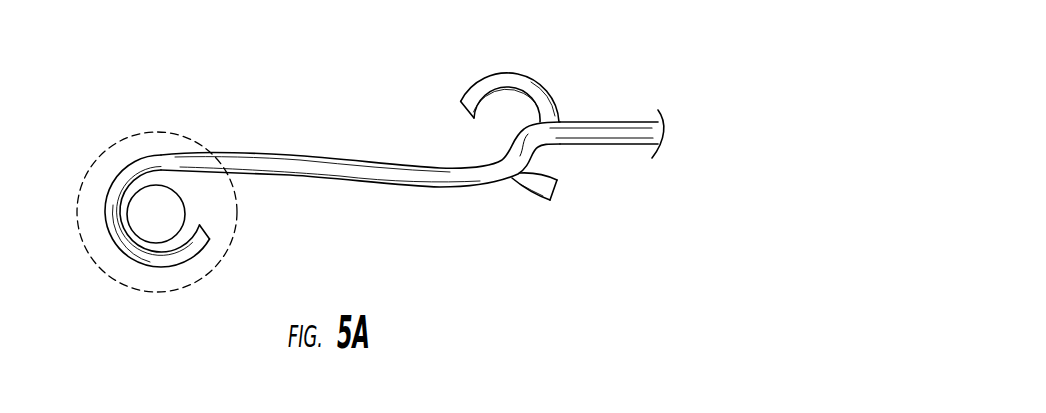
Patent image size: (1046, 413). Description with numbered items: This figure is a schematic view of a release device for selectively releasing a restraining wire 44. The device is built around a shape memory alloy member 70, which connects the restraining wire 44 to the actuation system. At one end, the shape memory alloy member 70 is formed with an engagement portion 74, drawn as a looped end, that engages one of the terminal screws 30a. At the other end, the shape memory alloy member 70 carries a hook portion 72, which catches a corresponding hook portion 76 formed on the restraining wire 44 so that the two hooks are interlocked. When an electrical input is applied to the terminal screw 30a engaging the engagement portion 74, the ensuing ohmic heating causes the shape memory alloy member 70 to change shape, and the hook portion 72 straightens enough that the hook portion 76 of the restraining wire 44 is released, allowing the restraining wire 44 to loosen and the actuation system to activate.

The terminal screw 30a is at (153, 131).
The shape memory alloy member 70 is at (460, 177).
The hook portion 72 is at (525, 91).
The engagement portion 74 is at (150, 262).
The hook portion 76 is at (543, 203).
The restraining wire 44 is at (605, 122).